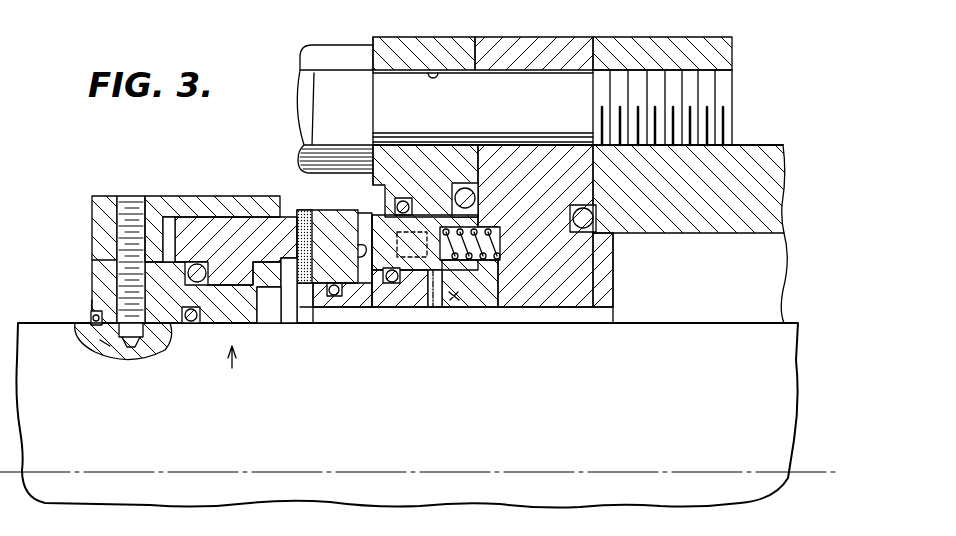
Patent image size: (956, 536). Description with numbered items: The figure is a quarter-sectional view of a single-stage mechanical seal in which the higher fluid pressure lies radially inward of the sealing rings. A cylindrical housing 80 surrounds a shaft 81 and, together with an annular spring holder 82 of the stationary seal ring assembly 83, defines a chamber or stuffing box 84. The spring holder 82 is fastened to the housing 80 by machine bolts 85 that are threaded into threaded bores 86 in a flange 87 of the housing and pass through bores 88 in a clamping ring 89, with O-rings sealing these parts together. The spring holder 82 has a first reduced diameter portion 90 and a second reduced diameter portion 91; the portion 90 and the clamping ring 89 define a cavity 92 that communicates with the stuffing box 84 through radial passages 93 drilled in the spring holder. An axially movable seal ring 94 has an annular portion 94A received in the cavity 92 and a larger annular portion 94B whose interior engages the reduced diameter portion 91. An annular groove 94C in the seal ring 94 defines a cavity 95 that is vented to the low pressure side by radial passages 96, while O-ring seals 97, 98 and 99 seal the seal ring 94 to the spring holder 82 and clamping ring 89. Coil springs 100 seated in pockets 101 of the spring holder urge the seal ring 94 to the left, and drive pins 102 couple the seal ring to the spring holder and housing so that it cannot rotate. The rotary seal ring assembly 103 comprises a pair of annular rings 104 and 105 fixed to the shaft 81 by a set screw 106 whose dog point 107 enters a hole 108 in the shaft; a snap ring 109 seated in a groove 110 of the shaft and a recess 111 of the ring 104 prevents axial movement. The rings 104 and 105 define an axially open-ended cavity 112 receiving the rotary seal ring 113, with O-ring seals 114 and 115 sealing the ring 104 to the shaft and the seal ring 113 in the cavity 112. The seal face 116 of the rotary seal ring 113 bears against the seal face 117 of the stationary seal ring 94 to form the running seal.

The cylindrical housing 80 is at (757, 152).
The shaft 81 is at (796, 349).
The annular spring holder 82 is at (604, 296).
The stationary seal ring assembly 83 is at (373, 319).
The stuffing box 84 is at (752, 289).
The machine bolts 85 is at (523, 80).
The threaded bores 86 is at (660, 74).
The flange 87 is at (733, 48).
The bores 88 is at (438, 72).
The clamping ring 89 is at (412, 47).
The first reduced diameter portion 90 is at (410, 272).
The second reduced diameter portion 91 is at (352, 300).
The cavity 92 is at (455, 195).
The radial passages 93 is at (438, 297).
The axially movable seal ring 94 is at (332, 213).
The annular portion 94A is at (383, 215).
The larger annular portion 94B is at (312, 192).
The annular groove 94C is at (343, 258).
The cavity 95 is at (392, 290).
The radial passages 96 is at (368, 215).
The O-ring seal 97 is at (330, 297).
The O-ring seal 98 is at (400, 308).
The O-ring seal 99 is at (410, 205).
The coil springs 100 is at (495, 262).
The pockets 101 is at (500, 253).
The drive pins 102 is at (453, 297).
The rotary seal ring assembly 103 is at (225, 371).
The annular ring 104 is at (100, 268).
The annular ring 105 is at (107, 231).
The set screw 106 is at (132, 205).
The dog point 107 is at (127, 360).
The hole 108 is at (140, 361).
The snap ring 109 is at (95, 332).
The groove 110 is at (100, 345).
The recess 111 is at (97, 303).
The axially open-ended cavity 112 is at (190, 217).
The rotary seal ring 113 is at (223, 217).
The O-ring seal 114 is at (193, 323).
The O-ring seal 115 is at (240, 302).
The seal face 116 is at (296, 244).
The seal face 117 is at (327, 246).